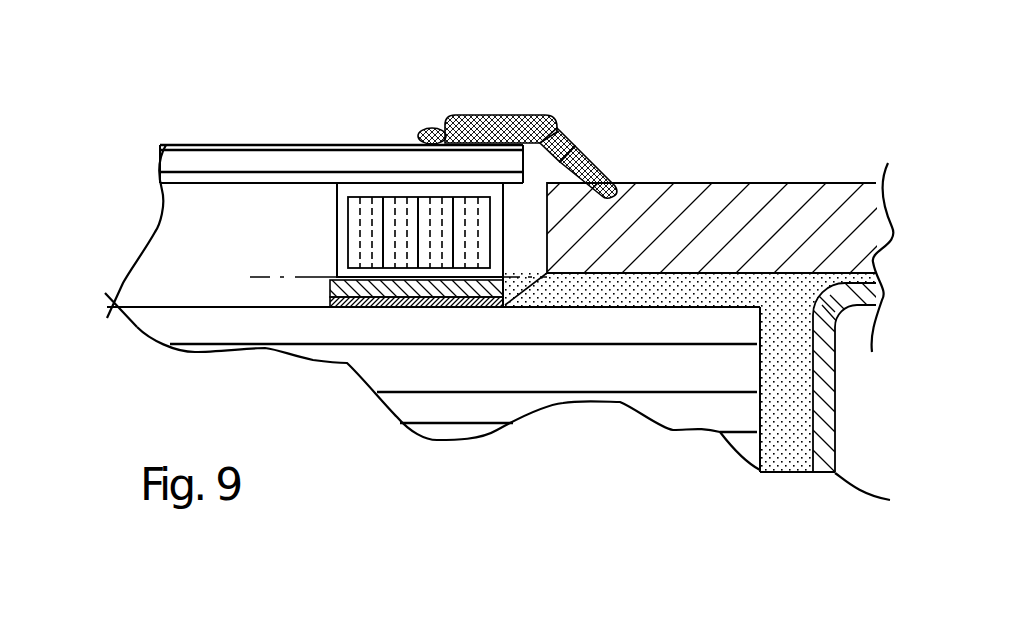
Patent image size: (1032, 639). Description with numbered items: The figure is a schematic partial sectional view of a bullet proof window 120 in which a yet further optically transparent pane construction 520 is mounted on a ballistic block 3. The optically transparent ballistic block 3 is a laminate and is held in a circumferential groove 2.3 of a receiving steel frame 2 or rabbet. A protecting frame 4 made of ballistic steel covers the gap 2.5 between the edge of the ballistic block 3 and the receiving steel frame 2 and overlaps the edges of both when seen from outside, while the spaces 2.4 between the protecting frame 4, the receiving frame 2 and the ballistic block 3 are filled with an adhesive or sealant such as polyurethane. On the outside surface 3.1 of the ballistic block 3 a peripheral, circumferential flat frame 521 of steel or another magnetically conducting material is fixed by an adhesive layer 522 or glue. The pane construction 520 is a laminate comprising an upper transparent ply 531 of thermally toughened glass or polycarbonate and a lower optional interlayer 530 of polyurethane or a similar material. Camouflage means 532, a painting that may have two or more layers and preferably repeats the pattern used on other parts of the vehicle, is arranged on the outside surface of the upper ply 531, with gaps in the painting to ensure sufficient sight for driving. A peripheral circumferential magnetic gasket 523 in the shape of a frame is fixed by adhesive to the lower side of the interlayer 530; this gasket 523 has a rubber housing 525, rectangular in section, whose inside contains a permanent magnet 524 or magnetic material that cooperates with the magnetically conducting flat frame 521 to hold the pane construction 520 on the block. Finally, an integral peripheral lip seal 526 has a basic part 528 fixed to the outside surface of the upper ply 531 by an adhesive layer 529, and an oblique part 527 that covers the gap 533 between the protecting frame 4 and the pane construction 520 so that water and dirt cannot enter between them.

The receiving steel frame 2 is at (823, 460).
The circumferential groove 2.3 is at (796, 340).
The spaces 2.4 is at (775, 447).
The gap 2.5 is at (797, 403).
The ballistic block 3 is at (503, 380).
The outside surface 3.1 is at (183, 288).
The protecting frame 4 is at (740, 192).
The bullet proof window 120 is at (382, 450).
The pane construction 520 is at (327, 165).
The flat frame 521 is at (327, 307).
The adhesive layer 522 is at (365, 307).
The magnetic gasket 523 is at (430, 273).
The permanent magnet 524 is at (473, 257).
The housing 525 is at (338, 217).
The lip seal 526 is at (498, 117).
The oblique part 527 is at (573, 152).
The basic part 528 is at (462, 123).
The adhesive layer 529 is at (433, 150).
The interlayer 530 is at (298, 175).
The upper ply 531 is at (263, 163).
The camouflage means 532 is at (166, 145).
The gap 533 is at (523, 218).